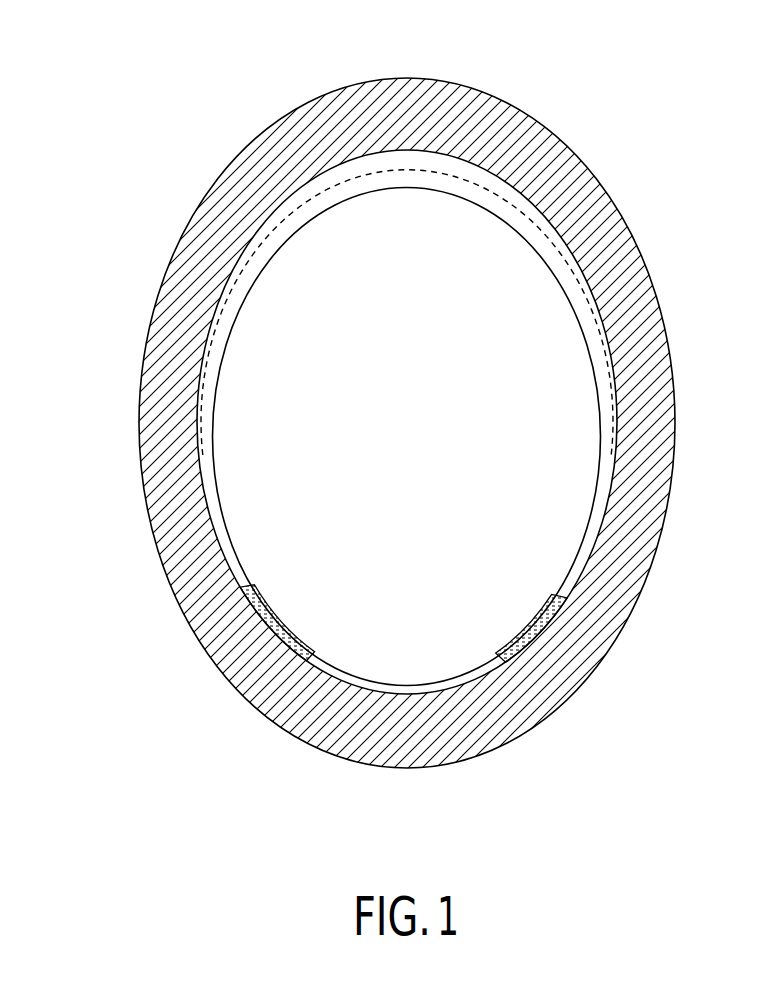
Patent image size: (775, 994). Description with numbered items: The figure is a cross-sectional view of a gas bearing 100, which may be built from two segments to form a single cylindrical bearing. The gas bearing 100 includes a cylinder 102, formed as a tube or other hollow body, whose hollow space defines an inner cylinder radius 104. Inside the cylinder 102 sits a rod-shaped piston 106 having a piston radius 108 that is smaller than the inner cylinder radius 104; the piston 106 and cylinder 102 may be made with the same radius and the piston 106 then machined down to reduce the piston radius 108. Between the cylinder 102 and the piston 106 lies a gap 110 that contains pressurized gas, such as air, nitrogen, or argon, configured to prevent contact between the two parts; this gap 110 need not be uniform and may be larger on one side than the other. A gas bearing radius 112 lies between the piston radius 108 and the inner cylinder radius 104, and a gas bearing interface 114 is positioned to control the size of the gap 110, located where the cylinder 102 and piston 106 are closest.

The gas bearing 100 is at (431, 38).
The cylinder 102 is at (273, 155).
The inner cylinder radius 104 is at (248, 233).
The piston 106 is at (575, 520).
The piston radius 108 is at (613, 437).
The gap 110 is at (508, 190).
The gas bearing radius 112 is at (477, 304).
The gas bearing interface 114 is at (280, 632).